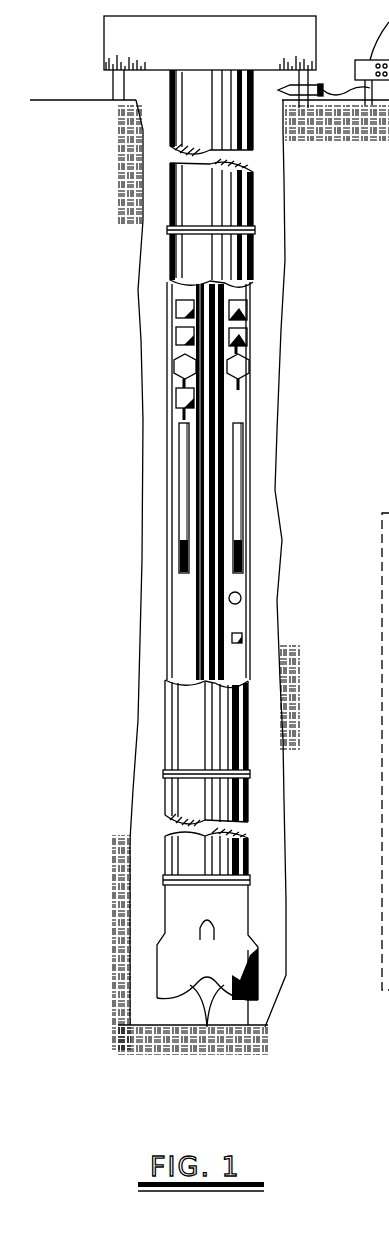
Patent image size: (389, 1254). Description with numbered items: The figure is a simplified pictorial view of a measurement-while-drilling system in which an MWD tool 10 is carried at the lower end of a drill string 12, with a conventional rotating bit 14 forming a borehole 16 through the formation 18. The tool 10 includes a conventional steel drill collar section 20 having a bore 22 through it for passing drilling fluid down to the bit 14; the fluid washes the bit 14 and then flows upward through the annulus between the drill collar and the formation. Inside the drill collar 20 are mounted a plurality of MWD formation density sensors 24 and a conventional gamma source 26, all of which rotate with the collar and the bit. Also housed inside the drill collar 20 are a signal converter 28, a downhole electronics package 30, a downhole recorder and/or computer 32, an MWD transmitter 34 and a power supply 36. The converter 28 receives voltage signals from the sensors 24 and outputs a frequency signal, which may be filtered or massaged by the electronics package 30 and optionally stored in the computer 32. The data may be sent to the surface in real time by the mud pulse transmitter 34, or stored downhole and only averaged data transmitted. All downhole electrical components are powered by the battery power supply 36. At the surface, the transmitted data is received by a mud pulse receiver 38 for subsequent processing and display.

The MWD tool 10 is at (150, 570).
The drill string 12 is at (253, 205).
The rotating bit 14 is at (227, 965).
The borehole 16 is at (270, 499).
The formation 18 is at (97, 858).
The drill collar section 20 is at (185, 258).
The bore 22 is at (200, 630).
The MWD formation density sensors 24 is at (177, 447).
The gamma source 26 is at (245, 633).
The signal converter 28 is at (180, 398).
The downhole electronics package 30 is at (240, 368).
The downhole recorder and/or computer 32 is at (176, 338).
The MWD transmitter 34 is at (176, 312).
The power supply 36 is at (242, 598).
The mud pulse receiver 38 is at (318, 88).